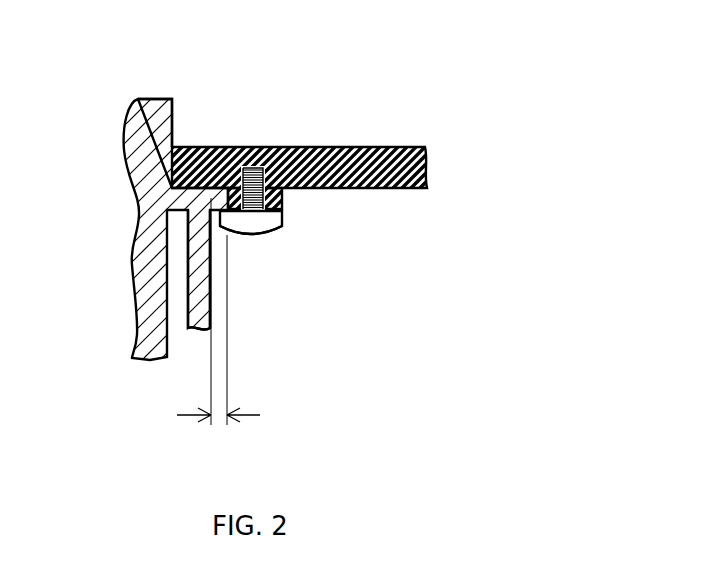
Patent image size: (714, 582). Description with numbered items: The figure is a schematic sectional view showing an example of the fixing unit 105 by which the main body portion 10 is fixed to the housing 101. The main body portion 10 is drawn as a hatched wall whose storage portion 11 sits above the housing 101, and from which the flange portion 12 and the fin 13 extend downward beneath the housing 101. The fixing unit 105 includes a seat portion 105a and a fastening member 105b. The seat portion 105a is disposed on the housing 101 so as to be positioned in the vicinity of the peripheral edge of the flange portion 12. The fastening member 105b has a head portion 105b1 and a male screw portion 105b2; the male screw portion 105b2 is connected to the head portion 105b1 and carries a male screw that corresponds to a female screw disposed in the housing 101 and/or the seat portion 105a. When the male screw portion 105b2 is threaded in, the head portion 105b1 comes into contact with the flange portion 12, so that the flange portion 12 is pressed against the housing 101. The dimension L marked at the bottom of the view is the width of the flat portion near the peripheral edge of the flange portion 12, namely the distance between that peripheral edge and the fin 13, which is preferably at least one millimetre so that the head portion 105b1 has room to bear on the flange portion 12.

The main body portion 10 is at (127, 78).
The storage portion 11 is at (157, 123).
The flange portion 12 is at (212, 198).
The fin 13 is at (198, 313).
The housing 101 is at (397, 160).
The fixing unit 105 is at (371, 218).
The seat portion 105a is at (282, 203).
The fastening member 105b is at (341, 218).
The head portion 105b1 is at (268, 224).
The male screw portion 105b2 is at (256, 167).